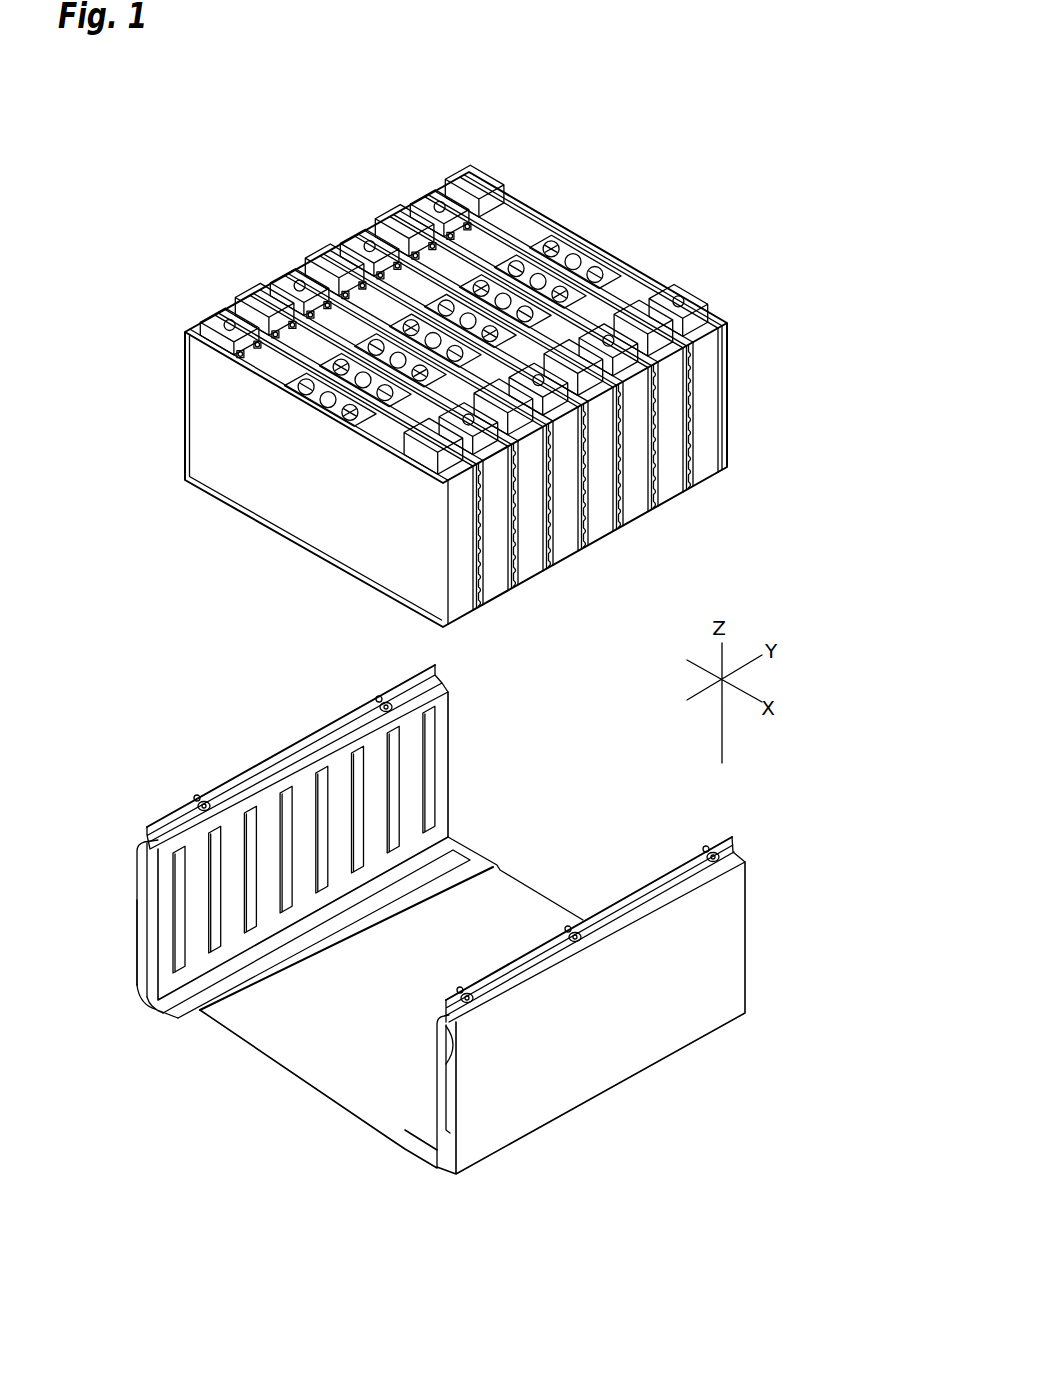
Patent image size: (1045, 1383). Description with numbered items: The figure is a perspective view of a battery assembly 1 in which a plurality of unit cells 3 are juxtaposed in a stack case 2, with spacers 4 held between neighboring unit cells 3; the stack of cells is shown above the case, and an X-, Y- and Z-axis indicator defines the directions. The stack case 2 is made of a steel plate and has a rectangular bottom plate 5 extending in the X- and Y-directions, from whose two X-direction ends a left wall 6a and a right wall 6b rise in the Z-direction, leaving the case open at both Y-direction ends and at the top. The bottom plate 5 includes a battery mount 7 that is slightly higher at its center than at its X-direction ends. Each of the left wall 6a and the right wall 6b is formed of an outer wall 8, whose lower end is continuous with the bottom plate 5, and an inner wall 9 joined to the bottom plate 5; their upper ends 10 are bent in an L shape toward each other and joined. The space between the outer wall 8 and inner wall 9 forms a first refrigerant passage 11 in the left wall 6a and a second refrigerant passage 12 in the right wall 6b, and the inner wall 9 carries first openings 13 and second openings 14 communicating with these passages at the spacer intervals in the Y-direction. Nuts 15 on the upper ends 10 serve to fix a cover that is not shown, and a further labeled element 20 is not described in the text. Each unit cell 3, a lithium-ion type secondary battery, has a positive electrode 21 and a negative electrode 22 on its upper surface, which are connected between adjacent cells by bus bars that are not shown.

The battery assembly 1 is at (567, 203).
The stack case 2 is at (616, 1082).
The unit cell 3 is at (199, 321).
The spacer 4 is at (482, 573).
The bottom plate 5 is at (523, 878).
The left wall 6a is at (335, 842).
The right wall 6b is at (577, 973).
The battery mount 7 is at (320, 1060).
The outer wall 8 is at (135, 945).
The inner wall 9 is at (137, 978).
The upper end 10 is at (285, 750).
The first refrigerant passage 11 is at (135, 843).
The second refrigerant passage 12 is at (446, 1043).
The first opening 13 is at (190, 845).
The second opening 14 is at (450, 1060).
The nut 15 is at (384, 698).
The screw 20 is at (704, 845).
The positive electrode 21 is at (488, 182).
The negative electrode 22 is at (680, 292).